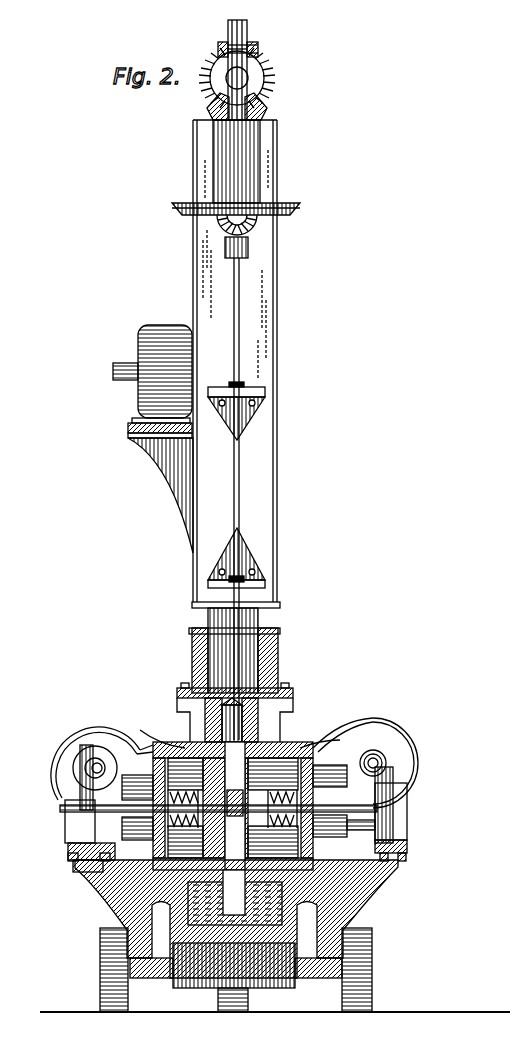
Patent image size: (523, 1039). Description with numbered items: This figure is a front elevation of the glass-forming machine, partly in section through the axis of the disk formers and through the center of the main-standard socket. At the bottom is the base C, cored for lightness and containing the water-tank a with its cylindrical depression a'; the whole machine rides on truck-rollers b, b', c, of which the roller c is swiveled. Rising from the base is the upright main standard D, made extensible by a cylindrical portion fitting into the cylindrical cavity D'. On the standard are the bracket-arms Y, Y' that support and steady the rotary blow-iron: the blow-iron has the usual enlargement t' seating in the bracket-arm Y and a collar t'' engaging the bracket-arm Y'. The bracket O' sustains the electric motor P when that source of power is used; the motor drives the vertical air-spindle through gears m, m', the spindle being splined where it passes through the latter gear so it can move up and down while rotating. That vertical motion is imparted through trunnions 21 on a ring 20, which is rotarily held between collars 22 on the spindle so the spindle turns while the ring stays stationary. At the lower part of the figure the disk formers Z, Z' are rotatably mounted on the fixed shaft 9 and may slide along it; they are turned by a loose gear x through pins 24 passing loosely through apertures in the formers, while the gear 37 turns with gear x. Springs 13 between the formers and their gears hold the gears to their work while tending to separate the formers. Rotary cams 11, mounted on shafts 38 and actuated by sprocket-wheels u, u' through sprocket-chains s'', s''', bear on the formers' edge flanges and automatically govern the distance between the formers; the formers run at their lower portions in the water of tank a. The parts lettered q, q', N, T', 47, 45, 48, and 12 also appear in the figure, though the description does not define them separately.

The ring 20 is at (255, 70).
The trunnions 21 is at (218, 49).
The collars 22 is at (258, 44).
The gear m is at (242, 78).
The gear m' is at (250, 106).
The gear wheel q is at (247, 175).
The bevel gear q' is at (261, 231).
The hub N is at (222, 250).
The electric motor P is at (152, 365).
The main standard D is at (250, 364).
The collar t'' is at (270, 375).
The bracket-arm Y' is at (265, 413).
The shaft T' is at (257, 459).
The bracket O' is at (160, 495).
The bracket-arm Y is at (259, 558).
The enlargement t' is at (269, 576).
The water-tank a is at (258, 646).
The cylindrical cavity D' is at (250, 660).
The flange 47 is at (205, 706).
The arm 45 is at (323, 722).
The disk former Z is at (225, 720).
The disk former Z' is at (290, 717).
The sprocket-chain s'' is at (155, 729).
The sprocket-chain s''' is at (330, 729).
The cone 48 is at (247, 726).
The sprocket-wheel u is at (102, 781).
The sprocket-wheel u' is at (365, 777).
The rotary cams 11 is at (80, 752).
The shafts 38 is at (90, 769).
The fixed shaft 9 is at (75, 808).
The pins 24 is at (350, 825).
The bolts 12 is at (68, 857).
The springs 13 is at (233, 806).
The gear x is at (231, 836).
The gear 37 is at (75, 876).
The base C is at (236, 919).
The cylindrical depression a' is at (253, 956).
The truck-roller b' is at (124, 970).
The truck-roller b is at (367, 970).
The truck-roller c is at (243, 1000).